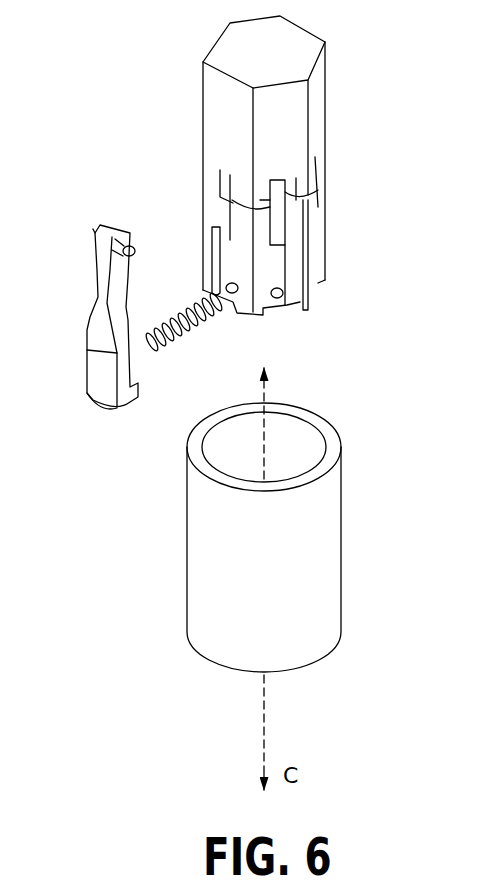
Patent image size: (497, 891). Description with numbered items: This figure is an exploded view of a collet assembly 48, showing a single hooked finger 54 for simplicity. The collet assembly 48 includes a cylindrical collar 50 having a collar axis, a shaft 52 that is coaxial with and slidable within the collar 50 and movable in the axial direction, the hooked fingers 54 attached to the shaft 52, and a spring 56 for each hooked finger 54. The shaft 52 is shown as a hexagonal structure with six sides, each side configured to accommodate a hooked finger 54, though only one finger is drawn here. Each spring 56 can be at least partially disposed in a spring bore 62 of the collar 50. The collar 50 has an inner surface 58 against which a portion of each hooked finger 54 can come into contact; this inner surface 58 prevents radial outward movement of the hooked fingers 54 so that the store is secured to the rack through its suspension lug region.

The collet assembly 48 is at (90, 109).
The cylindrical collar 50 is at (354, 557).
The shaft 52 is at (335, 101).
The hooked finger 54 is at (96, 331).
The spring 56 is at (195, 317).
The inner surface 58 is at (325, 452).
The spring bore 62 is at (279, 302).